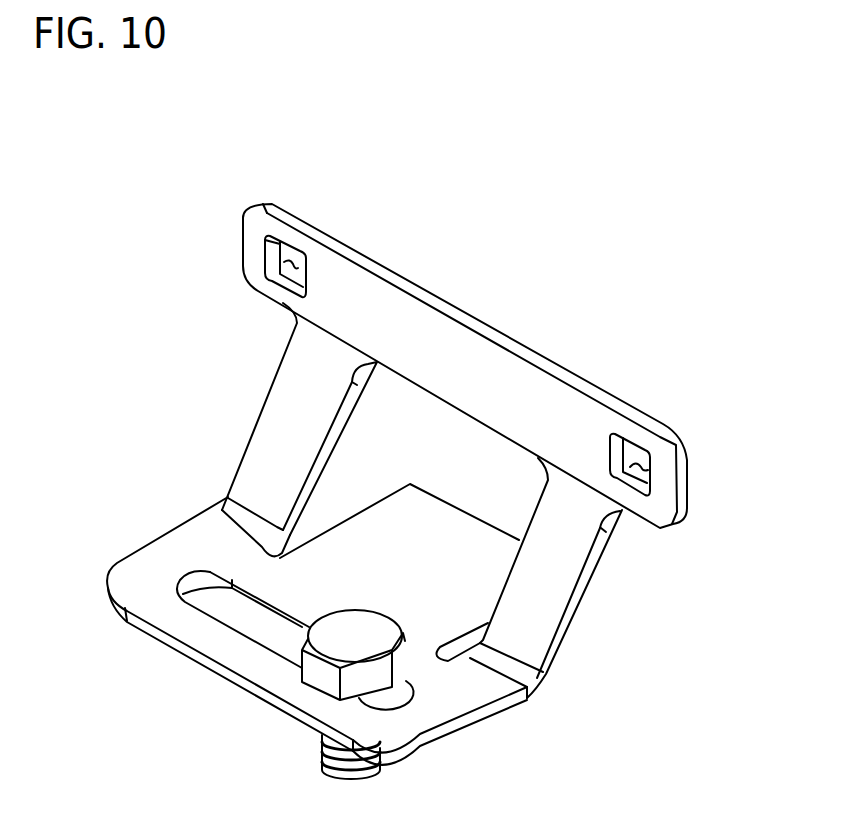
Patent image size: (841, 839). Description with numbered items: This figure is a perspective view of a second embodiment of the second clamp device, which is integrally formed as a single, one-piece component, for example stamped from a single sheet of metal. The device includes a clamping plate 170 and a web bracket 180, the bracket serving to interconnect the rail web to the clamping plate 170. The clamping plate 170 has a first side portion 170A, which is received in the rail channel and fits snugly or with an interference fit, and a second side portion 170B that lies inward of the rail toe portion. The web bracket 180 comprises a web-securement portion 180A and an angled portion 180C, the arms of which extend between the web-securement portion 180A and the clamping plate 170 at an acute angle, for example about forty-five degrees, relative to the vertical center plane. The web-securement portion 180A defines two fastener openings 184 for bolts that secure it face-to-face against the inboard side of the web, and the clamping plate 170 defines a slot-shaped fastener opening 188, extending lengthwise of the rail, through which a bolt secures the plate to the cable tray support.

The clamping plate 170 is at (305, 625).
The first side portion 170A is at (440, 522).
The second side portion 170B is at (263, 692).
The web bracket 180 is at (448, 451).
The web-securement portion 180A is at (466, 371).
The angled portion 180C is at (273, 457).
The fastener opening 184 is at (268, 288).
The fastener opening 188 is at (247, 618).